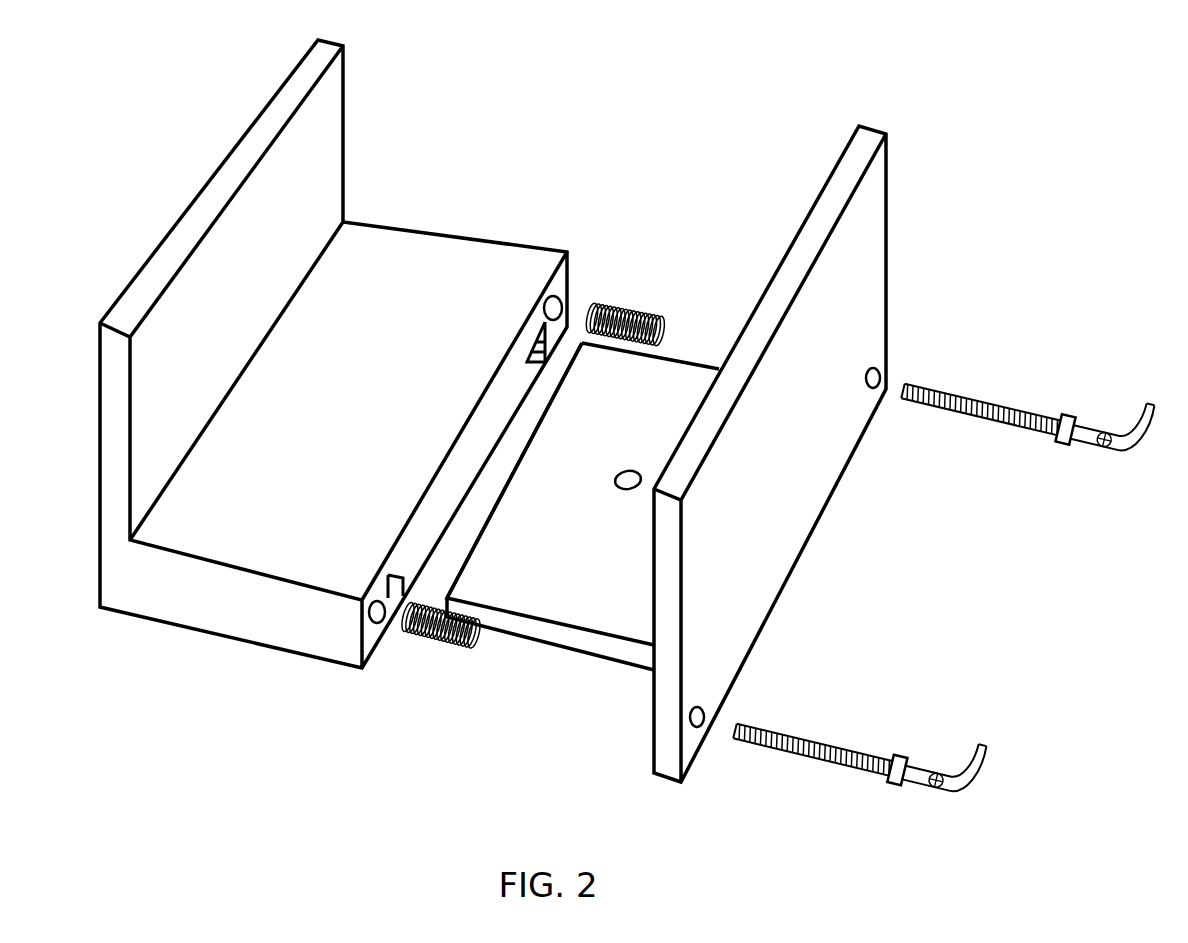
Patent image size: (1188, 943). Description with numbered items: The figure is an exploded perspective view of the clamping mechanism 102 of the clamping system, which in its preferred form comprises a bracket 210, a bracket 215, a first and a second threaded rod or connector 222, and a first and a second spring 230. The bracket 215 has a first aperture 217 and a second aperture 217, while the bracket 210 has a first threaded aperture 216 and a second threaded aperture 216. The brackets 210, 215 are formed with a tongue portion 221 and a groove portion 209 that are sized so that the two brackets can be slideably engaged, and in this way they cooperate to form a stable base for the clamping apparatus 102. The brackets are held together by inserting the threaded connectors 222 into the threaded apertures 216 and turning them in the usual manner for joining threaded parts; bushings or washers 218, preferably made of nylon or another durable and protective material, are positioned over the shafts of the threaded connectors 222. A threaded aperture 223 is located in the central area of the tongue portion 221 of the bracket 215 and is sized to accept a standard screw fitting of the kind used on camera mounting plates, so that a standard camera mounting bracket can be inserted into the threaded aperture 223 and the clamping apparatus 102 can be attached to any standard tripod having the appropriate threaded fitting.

The clamping mechanism 102 is at (974, 112).
The bracket 210 is at (178, 213).
The threaded aperture 216 is at (563, 290).
The spring 230 is at (630, 306).
The tongue portion 221 is at (613, 421).
The groove portion 209 is at (492, 445).
The threaded aperture 223 is at (630, 493).
The bracket 215 is at (786, 243).
The aperture 217 is at (873, 392).
The threaded rod or connector 222 is at (987, 403).
The bushing or washer 218 is at (1063, 418).